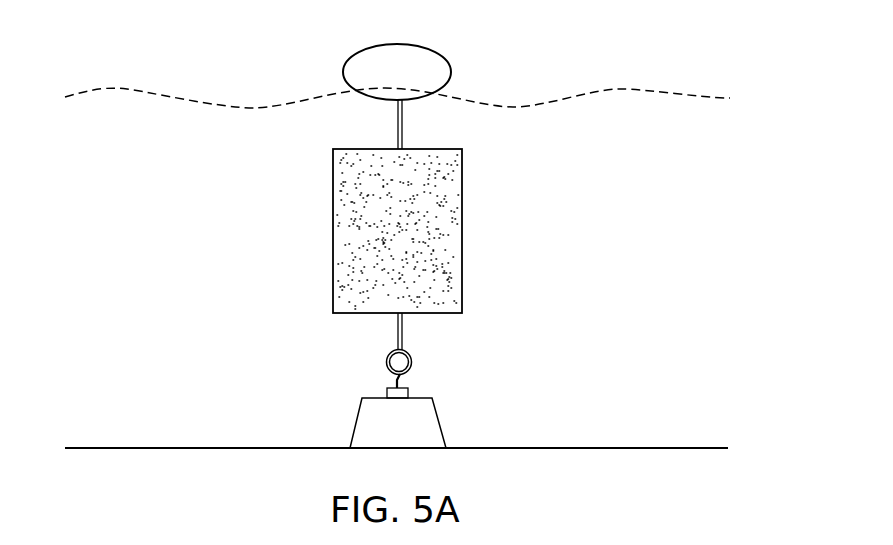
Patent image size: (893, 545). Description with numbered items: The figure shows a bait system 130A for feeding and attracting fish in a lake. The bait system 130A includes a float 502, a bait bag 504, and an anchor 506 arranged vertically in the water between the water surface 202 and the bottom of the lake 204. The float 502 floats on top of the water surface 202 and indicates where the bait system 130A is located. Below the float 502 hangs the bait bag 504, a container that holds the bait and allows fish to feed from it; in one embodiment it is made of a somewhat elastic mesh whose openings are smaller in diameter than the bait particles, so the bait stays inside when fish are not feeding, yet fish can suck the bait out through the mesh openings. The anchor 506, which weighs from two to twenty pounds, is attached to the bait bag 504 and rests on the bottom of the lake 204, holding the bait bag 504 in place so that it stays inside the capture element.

The bait system 130A is at (257, 195).
The water surface 202 is at (620, 89).
The bottom of the lake 204 is at (230, 448).
The float 502 is at (418, 44).
The bait bag 504 is at (462, 228).
The anchor 506 is at (423, 415).